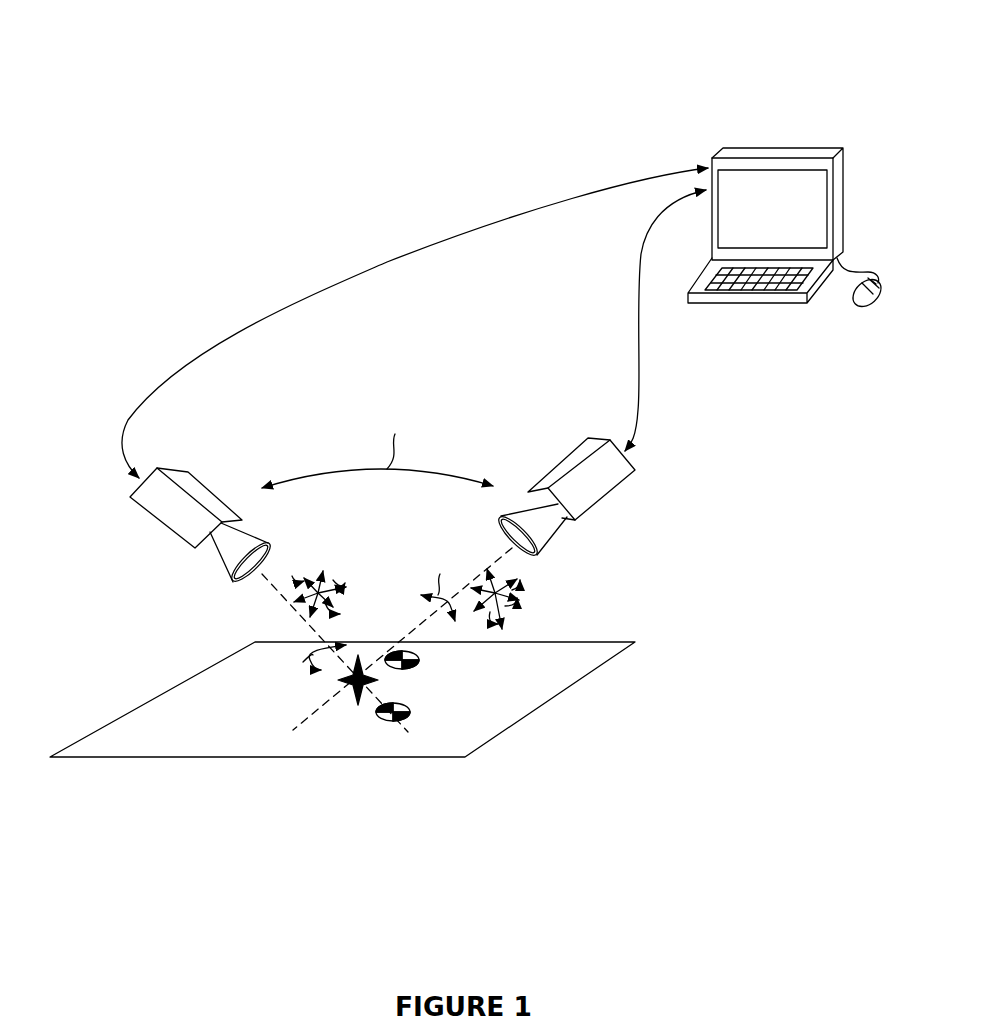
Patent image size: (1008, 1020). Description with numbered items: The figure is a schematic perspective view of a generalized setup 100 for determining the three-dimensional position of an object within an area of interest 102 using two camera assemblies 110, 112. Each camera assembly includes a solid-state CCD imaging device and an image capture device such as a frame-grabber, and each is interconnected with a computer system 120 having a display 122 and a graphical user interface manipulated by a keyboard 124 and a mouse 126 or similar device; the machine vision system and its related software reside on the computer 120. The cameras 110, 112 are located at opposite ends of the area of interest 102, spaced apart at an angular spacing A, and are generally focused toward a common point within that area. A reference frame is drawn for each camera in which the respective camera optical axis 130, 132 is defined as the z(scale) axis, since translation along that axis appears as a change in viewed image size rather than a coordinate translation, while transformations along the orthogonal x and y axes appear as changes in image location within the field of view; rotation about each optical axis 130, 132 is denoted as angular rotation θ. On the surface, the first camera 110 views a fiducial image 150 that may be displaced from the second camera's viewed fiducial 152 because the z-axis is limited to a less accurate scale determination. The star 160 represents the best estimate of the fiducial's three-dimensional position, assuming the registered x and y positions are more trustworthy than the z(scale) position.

The generalized setup 100 is at (460, 77).
The area of interest 102 is at (559, 661).
The first camera assembly 110 is at (177, 508).
The second camera assembly 112 is at (592, 480).
The computer system 120 is at (777, 155).
The display 122 is at (813, 222).
The keyboard 124 is at (752, 307).
The mouse 126 is at (860, 303).
The camera optical axis 130 is at (267, 583).
The camera optical axis 132 is at (497, 556).
The fiducial image 150 is at (410, 712).
The viewed fiducial 152 is at (419, 661).
The star 160 is at (365, 709).